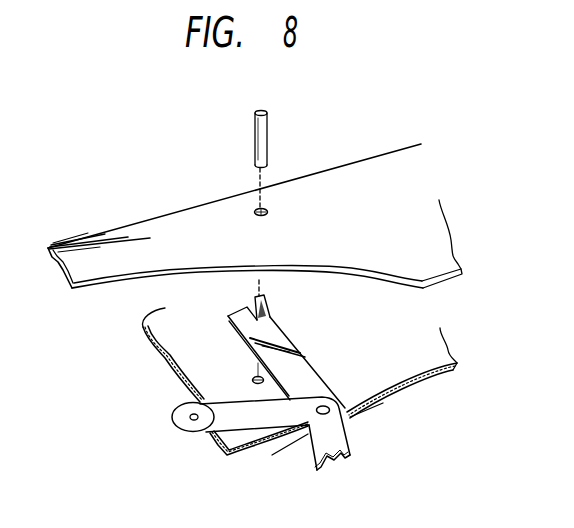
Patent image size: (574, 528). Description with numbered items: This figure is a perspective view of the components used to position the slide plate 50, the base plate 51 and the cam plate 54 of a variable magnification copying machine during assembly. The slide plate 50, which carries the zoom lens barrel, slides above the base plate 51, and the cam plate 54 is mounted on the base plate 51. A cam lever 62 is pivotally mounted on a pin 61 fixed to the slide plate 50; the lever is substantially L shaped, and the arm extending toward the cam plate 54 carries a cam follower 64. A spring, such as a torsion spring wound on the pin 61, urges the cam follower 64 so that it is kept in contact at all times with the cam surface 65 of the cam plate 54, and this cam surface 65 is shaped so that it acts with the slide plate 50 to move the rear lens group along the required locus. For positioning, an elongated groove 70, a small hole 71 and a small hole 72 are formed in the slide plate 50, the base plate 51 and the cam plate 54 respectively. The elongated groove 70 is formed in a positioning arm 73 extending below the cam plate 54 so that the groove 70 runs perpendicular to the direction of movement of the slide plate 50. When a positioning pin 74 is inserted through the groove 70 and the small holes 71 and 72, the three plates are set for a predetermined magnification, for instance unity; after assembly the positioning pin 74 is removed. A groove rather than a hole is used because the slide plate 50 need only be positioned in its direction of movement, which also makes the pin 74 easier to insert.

The slide plate 50 is at (364, 391).
The base plate 51 is at (173, 347).
The cam plate 54 is at (170, 234).
The pin 61 is at (318, 418).
The cam lever 62 is at (251, 447).
The cam follower 64 is at (187, 425).
The cam surface 65 is at (133, 280).
The elongated groove 70 is at (270, 320).
The small hole 71 is at (254, 377).
The small hole 72 is at (268, 211).
The positioning arm 73 is at (317, 384).
The positioning pin 74 is at (267, 137).